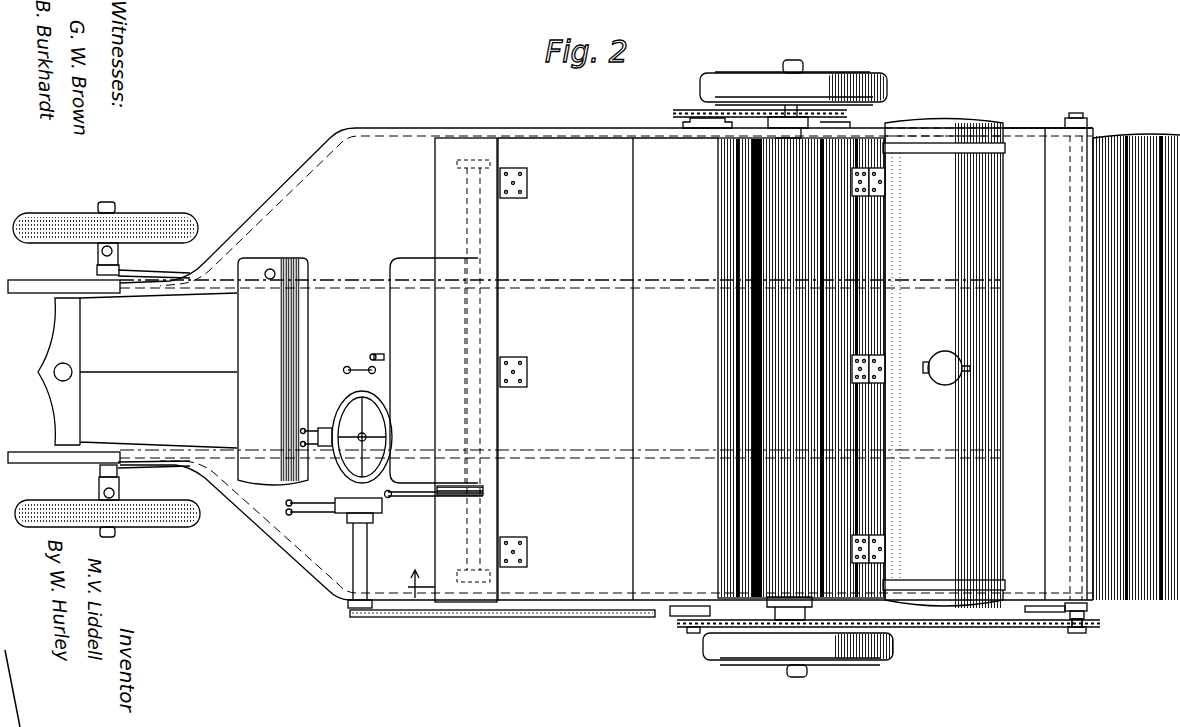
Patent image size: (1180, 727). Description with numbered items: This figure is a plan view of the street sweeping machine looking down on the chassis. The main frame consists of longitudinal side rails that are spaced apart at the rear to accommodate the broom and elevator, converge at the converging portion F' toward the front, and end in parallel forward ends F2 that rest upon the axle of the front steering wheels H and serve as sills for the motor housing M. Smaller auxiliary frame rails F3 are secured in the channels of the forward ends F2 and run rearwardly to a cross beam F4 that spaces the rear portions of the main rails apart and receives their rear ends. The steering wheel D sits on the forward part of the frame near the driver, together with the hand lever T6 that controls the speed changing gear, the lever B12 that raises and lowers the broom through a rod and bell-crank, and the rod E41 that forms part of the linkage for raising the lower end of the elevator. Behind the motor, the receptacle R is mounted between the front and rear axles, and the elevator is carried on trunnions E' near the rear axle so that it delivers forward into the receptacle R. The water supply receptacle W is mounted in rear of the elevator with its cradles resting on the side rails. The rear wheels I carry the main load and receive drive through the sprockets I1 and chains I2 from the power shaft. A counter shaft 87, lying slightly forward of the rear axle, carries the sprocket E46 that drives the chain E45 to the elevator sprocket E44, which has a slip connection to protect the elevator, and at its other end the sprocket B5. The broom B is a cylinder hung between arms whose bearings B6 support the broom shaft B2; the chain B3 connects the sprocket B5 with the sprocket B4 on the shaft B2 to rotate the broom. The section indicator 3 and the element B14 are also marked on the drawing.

The converging portion of side rails F' is at (606, 371).
The parallel forward ends of main frame F2 is at (24, 455).
The auxiliary frame rails F3 is at (895, 459).
The cross beam F4 is at (840, 332).
The motor housing M is at (137, 370).
The front wheels H is at (160, 226).
The broom lifting lever B12 is at (320, 520).
The steering wheel D is at (346, 403).
The hand lever T6 is at (386, 357).
The rotary broom B is at (440, 612).
The section line 3 is at (414, 584).
The elevator lifting rod E41 is at (507, 619).
The receptacle R is at (608, 369).
The elevator trunnions E' is at (801, 368).
The water supply receptacle W is at (944, 364).
The roller B14 is at (1118, 378).
The broom shaft B2 is at (1088, 615).
The broom shaft bearings B6 is at (1044, 608).
The broom shaft sprocket B4 is at (1092, 630).
The rear wheels I is at (888, 90).
The elevator drive sprocket E44 is at (680, 110).
The elevator drive chain E45 is at (742, 110).
The counter shaft elevator sprocket E46 is at (790, 117).
The counter shaft 87 is at (828, 117).
The counter shaft broom sprocket B5 is at (785, 633).
The broom drive chain B3 is at (972, 628).
The power shaft sprockets I1 is at (680, 628).
The rear wheel drive chains I2 is at (695, 635).